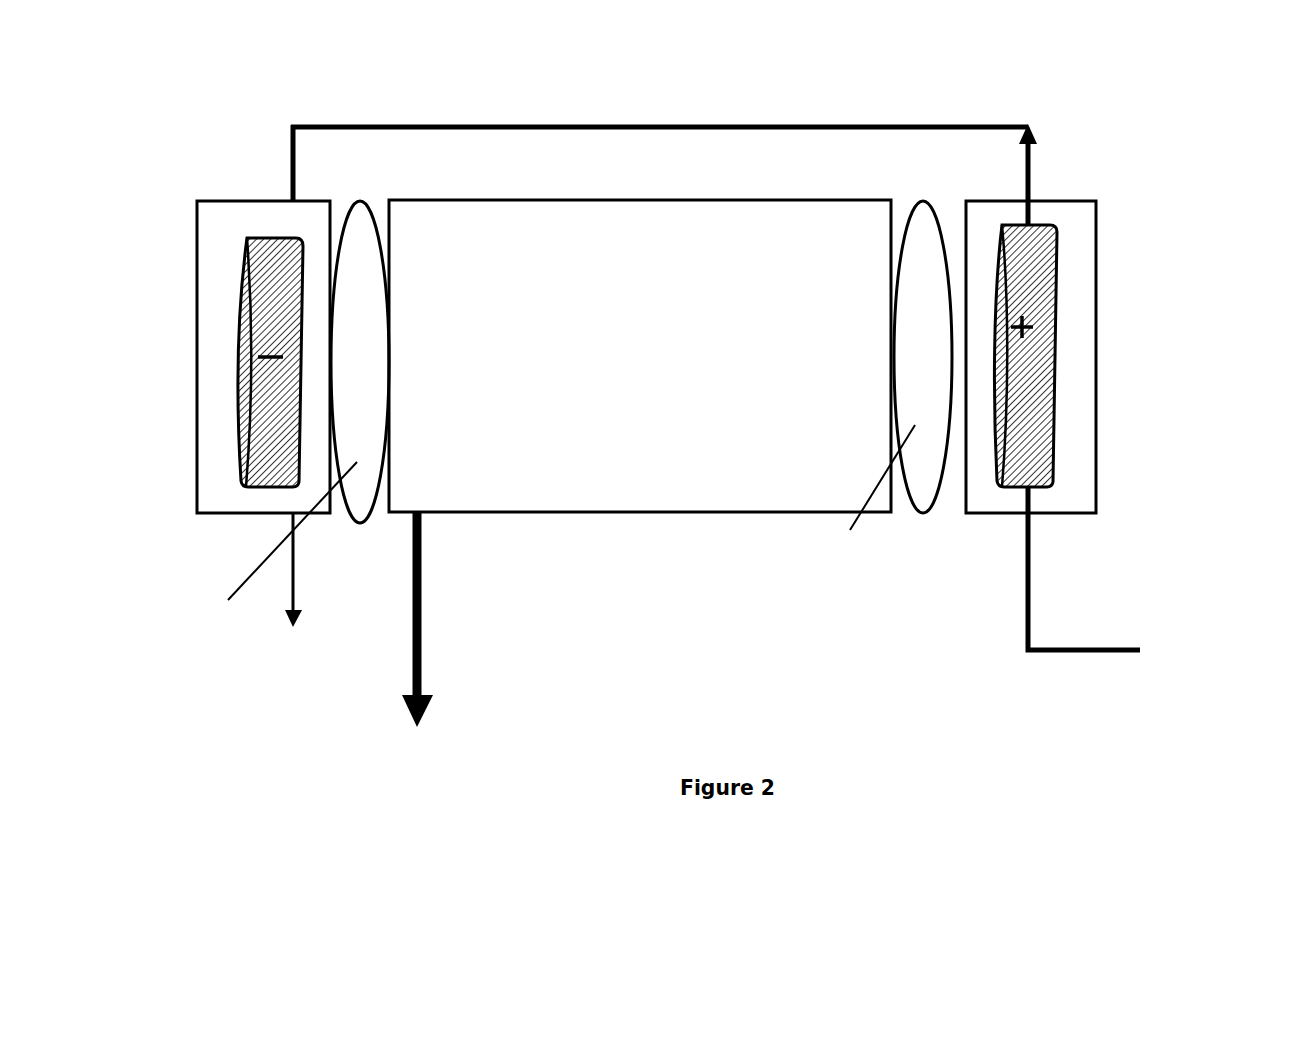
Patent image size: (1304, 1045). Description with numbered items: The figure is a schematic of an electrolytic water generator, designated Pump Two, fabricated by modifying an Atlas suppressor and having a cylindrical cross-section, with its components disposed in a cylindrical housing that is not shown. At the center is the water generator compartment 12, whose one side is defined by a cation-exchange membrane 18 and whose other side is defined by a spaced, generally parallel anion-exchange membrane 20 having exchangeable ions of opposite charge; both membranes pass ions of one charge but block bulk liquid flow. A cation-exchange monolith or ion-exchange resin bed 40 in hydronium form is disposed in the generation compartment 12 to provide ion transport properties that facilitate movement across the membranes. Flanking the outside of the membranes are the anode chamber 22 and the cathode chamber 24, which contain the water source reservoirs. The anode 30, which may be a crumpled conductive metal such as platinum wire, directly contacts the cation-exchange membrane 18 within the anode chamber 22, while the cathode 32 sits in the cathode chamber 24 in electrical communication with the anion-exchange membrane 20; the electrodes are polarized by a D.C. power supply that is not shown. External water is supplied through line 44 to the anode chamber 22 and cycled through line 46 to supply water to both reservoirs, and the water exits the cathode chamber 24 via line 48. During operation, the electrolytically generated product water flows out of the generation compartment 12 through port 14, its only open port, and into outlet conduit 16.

The water generator compartment 12 is at (460, 192).
The port 14 is at (422, 518).
The outlet conduit 16 is at (413, 652).
The cation-exchange membrane 18 is at (923, 200).
The anion-exchange membrane 20 is at (358, 200).
The anode chamber 22 is at (1052, 207).
The cathode chamber 24 is at (237, 197).
The anode 30 is at (1043, 502).
The cathode 32 is at (245, 262).
The cation-exchange monolith or ion-exchange resin bed 40 is at (700, 218).
The external water supply line 44 is at (1032, 570).
The cycling line 46 is at (507, 115).
The water exit line 48 is at (298, 588).